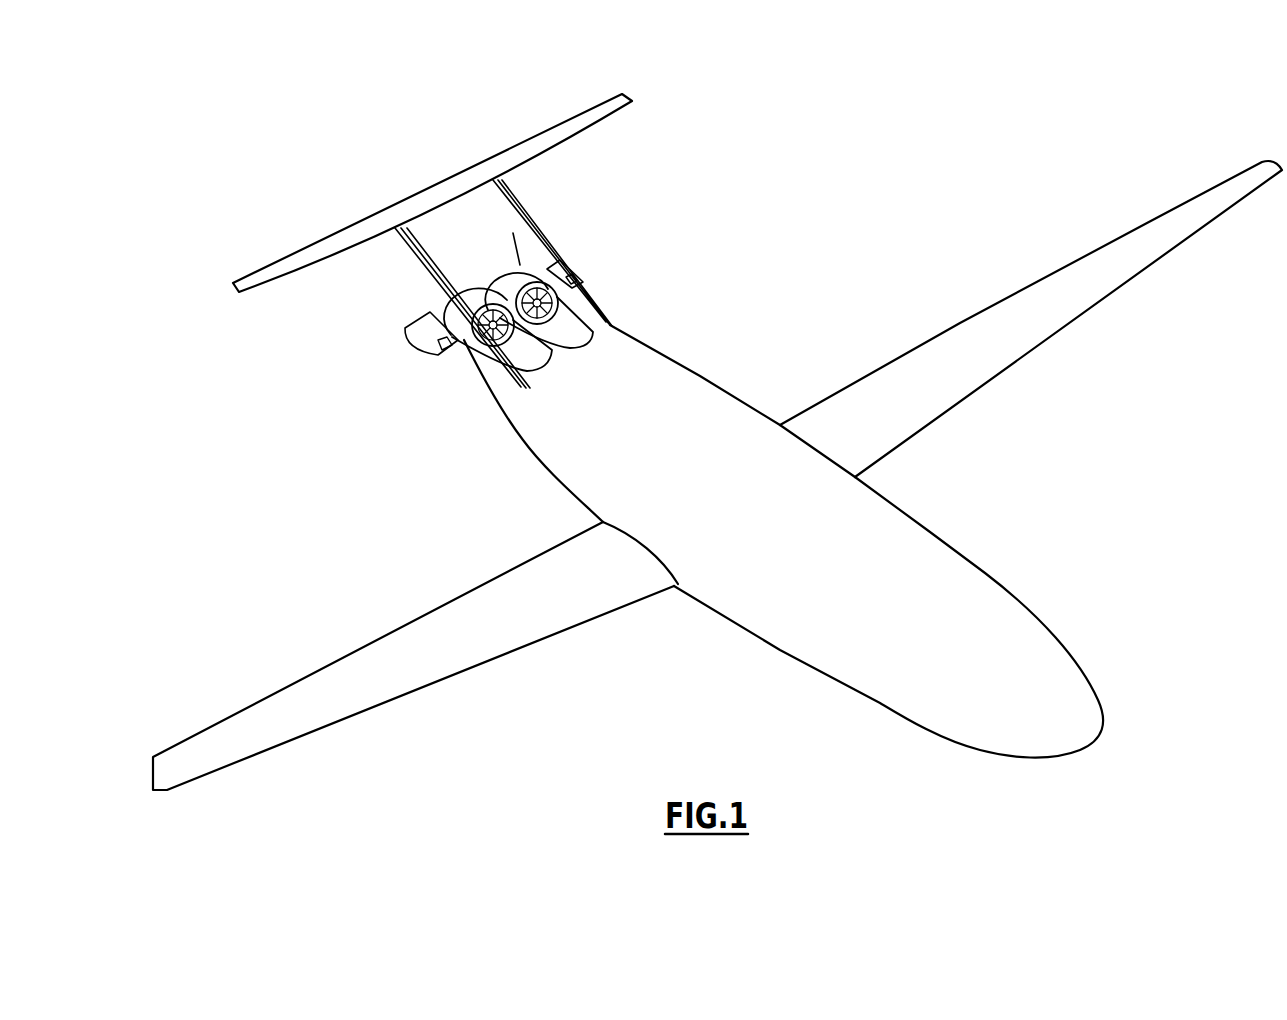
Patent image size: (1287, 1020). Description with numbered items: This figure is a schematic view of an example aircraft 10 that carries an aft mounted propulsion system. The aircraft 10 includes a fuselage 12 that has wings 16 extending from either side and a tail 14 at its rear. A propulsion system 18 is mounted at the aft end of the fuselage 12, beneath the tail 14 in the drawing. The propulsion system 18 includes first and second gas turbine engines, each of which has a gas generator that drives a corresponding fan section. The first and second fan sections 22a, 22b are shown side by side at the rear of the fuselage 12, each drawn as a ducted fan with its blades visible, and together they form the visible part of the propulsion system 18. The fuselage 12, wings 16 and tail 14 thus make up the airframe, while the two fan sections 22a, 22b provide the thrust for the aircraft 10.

The aircraft 10 is at (884, 188).
The fuselage 12 is at (972, 580).
The tail 14 is at (508, 155).
The wings 16 is at (990, 357).
The propulsion system 18 is at (380, 364).
The first fan section 22a is at (537, 282).
The second fan section 22b is at (475, 310).